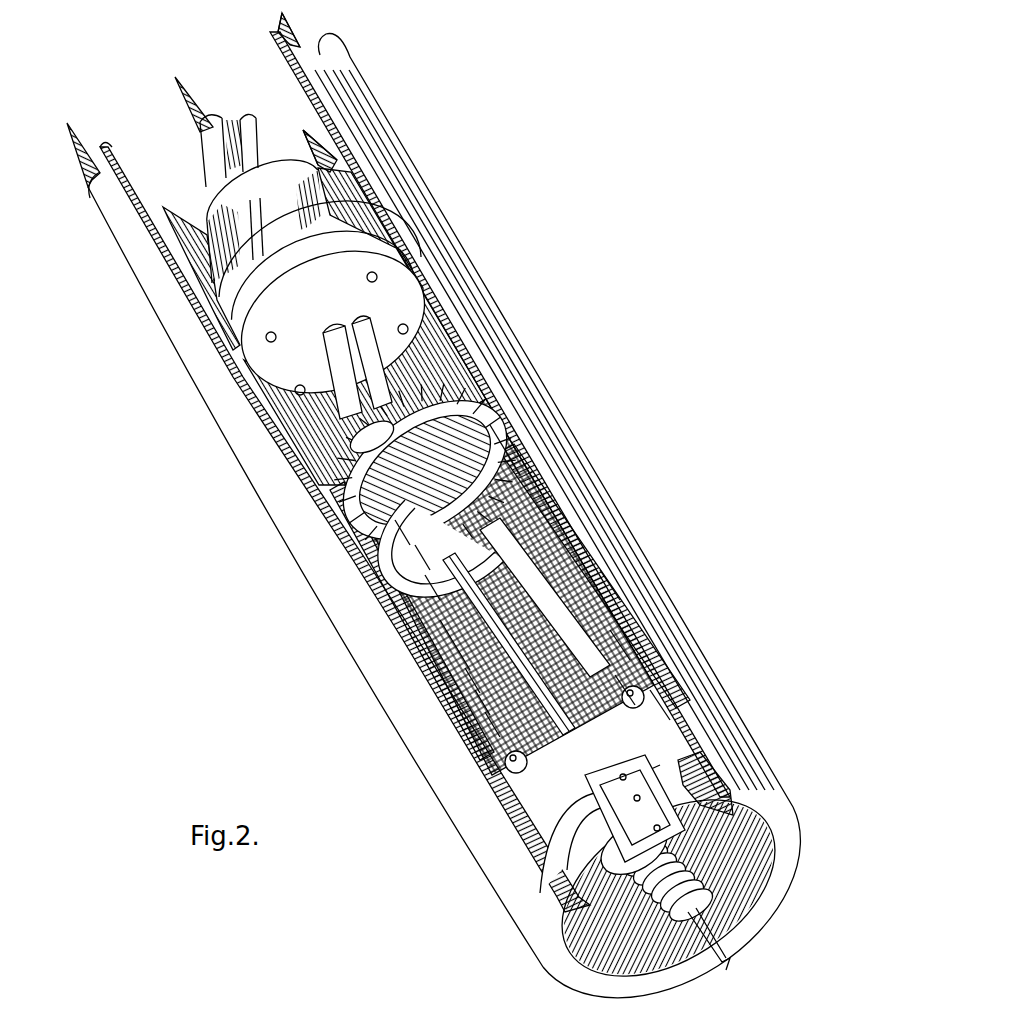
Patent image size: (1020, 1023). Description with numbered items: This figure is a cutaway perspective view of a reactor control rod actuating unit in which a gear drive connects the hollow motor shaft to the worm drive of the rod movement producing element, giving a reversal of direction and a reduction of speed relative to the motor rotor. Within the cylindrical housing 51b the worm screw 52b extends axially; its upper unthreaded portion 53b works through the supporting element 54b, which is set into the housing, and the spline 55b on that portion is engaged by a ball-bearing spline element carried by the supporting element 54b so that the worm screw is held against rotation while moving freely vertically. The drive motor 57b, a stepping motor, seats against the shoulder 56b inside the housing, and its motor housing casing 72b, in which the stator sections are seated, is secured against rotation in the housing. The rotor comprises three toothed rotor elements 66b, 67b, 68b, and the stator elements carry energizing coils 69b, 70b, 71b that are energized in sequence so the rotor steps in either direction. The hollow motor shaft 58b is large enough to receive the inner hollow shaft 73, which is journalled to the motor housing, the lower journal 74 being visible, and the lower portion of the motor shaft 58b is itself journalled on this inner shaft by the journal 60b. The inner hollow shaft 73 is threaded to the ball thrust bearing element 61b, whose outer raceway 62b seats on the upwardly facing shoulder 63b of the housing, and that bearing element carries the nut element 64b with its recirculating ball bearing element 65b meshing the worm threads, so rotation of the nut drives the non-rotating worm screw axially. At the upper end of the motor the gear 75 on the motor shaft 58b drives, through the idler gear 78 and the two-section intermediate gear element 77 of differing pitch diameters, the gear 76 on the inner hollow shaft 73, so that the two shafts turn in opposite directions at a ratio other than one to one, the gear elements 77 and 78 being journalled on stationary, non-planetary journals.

The cylindrical housing 51b is at (563, 487).
The worm screw 52b is at (687, 890).
The upper unthreaded portion of worm screw 53b is at (390, 393).
The supporting element 54b is at (387, 235).
The spline 55b is at (373, 367).
The shoulder 56b is at (600, 598).
The drive motor 57b is at (583, 550).
The hollow motor shaft 58b is at (555, 525).
The ball bearing journal 60b is at (610, 618).
The ball thrust bearing element 61b is at (645, 700).
The outer raceway 62b is at (625, 680).
The upwardly facing shoulder 63b is at (660, 684).
The nut element 64b is at (506, 770).
The recirculating ball bearing element 65b is at (640, 782).
The rotor element 66b is at (445, 625).
The rotor element 67b is at (470, 672).
The rotor element 68b is at (480, 693).
The stator energizing coil 69b is at (430, 580).
The stator energizing coil 70b is at (460, 650).
The stator energizing coil 71b is at (490, 718).
The motor housing casing 72b is at (557, 460).
The inner hollow shaft 73 is at (605, 568).
The lower journal 74 is at (625, 628).
The gear on motor shaft 75 is at (535, 442).
The gear on inner hollow shaft 76 is at (500, 432).
The intermediate gear element 77 is at (400, 528).
The idler gear 78 is at (420, 550).